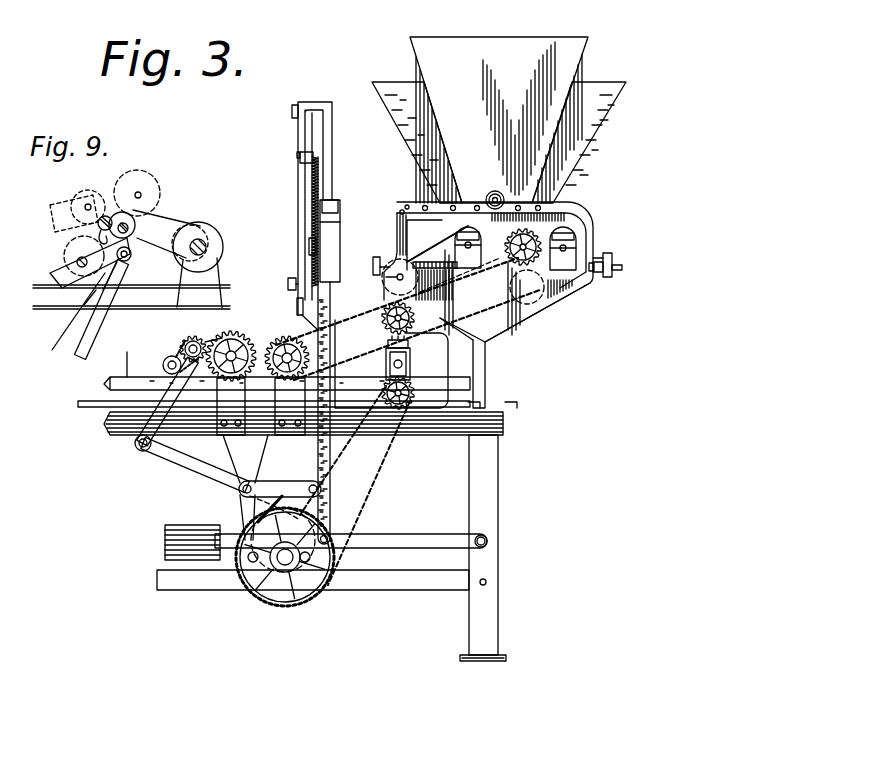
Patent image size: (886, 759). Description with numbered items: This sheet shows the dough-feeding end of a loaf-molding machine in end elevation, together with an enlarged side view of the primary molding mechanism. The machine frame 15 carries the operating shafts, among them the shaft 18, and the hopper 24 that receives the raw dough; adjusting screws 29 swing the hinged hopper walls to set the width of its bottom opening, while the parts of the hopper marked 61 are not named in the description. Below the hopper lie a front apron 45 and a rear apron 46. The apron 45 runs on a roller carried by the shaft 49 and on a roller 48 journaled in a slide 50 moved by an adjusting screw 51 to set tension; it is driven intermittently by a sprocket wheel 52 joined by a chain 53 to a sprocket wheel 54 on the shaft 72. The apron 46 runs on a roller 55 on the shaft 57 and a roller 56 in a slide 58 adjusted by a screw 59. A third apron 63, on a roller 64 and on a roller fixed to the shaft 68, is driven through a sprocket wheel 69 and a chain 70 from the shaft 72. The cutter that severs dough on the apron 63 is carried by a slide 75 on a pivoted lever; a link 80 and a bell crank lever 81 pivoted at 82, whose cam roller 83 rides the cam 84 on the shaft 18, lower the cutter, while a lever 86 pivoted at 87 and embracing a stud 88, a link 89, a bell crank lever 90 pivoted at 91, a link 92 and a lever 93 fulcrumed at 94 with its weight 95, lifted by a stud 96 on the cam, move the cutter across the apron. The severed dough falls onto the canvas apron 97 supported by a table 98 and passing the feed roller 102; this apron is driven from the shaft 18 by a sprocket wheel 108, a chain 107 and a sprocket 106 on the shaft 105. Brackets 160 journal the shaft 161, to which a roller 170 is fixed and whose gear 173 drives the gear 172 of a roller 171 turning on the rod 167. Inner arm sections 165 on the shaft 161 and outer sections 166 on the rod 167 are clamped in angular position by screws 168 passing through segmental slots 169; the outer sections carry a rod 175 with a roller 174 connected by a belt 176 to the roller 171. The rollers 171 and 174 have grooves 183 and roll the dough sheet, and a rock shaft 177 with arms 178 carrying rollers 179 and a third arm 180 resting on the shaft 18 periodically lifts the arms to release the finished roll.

In FIG. 3, the machine frame 15 is at (470, 455).
In FIG. 3, the shaft 18 is at (292, 568).
In FIG. 3, the hopper 24 is at (499, 105).
In FIG. 3, the adjusting screws 29 is at (500, 192).
In FIG. 3, the apron 45 is at (547, 229).
In FIG. 3, the apron 46 is at (422, 258).
In FIG. 3, the roller 48 is at (572, 235).
In FIG. 3, the shaft 49 is at (540, 232).
In FIG. 3, the slide 50 is at (582, 265).
In FIG. 3, the adjusting screw 51 is at (620, 268).
In FIG. 3, the sprocket wheel 52 is at (515, 287).
In FIG. 3, the chain 53 is at (470, 300).
In FIG. 3, the sprocket wheel 54 is at (455, 318).
In FIG. 3, the roller 55 is at (392, 286).
In FIG. 3, the roller 56 is at (455, 250).
In FIG. 3, the shaft 57 is at (397, 277).
In FIG. 3, the slide 58 is at (513, 255).
In FIG. 3, the adjusting screw 59 is at (373, 265).
In FIG. 3, the hopper wing 61 is at (392, 86).
In FIG. 3, the third apron or conveyer 63 is at (507, 300).
In FIG. 3, the roller 64 is at (540, 302).
In FIG. 3, the shaft 68 is at (282, 383).
In FIG. 3, the sprocket wheel 69 is at (297, 341).
In FIG. 3, the chain 70 is at (358, 355).
In FIG. 3, the shaft 72 is at (412, 330).
In FIG. 3, the slide 75 is at (297, 304).
In FIG. 3, the link 80 is at (312, 444).
In FIG. 3, the bell crank lever 81 is at (318, 463).
In FIG. 3, the pivot 82 is at (241, 492).
In FIG. 3, the cam roller 83 is at (256, 576).
In FIG. 3, the cam 84 is at (260, 508).
In FIG. 3, the lever 86 is at (298, 200).
In FIG. 3, the pivot 87 is at (294, 105).
In FIG. 3, the stud 88 is at (288, 282).
In FIG. 3, the link 89 is at (300, 160).
In FIG. 3, the bell crank lever 90 is at (315, 208).
In FIG. 3, the pivot 91 is at (309, 246).
In FIG. 3, the link 92 is at (330, 458).
In FIG. 3, the lever 93 is at (405, 536).
In FIG. 3, the fulcrum 94 is at (488, 540).
In FIG. 3, the weight 95 is at (180, 526).
In FIG. 3, the stud or roller 96 is at (310, 565).
In FIG. 3, the fourth apron or conveyer 97 is at (127, 355).
In FIG. 3, the table 98 is at (108, 384).
In FIG. 3, the feed roller 102 is at (410, 368).
In FIG. 3, the shaft 105 is at (412, 392).
In FIG. 3, the sprocket 106 is at (402, 410).
In FIG. 3, the chain 107 is at (367, 490).
In FIG. 3, the sprocket wheel 108 is at (281, 608).
In FIG. 3, the brackets 160 is at (224, 432).
In FIG. 9, the brackets 160 is at (181, 312).
In FIG. 3, the shaft 161 is at (242, 333).
In FIG. 9, the shaft 161 is at (201, 241).
In FIG. 9, the inner sections 165 is at (160, 230).
In FIG. 9, the outer sections 166 is at (54, 272).
In FIG. 3, the rod or shaft 167 is at (194, 342).
In FIG. 9, the rod or shaft 167 is at (120, 223).
In FIG. 9, the clamp screws 168 is at (97, 233).
In FIG. 9, the segmental slots 169 is at (79, 257).
In FIG. 9, the roller 170 is at (218, 232).
In FIG. 9, the second roller 171 is at (125, 210).
In FIG. 3, the gear 172 is at (188, 341).
In FIG. 3, the gear 173 is at (220, 332).
In FIG. 3, the third roller 174 is at (177, 356).
In FIG. 9, the third roller 174 is at (86, 301).
In FIG. 3, the rod or shaft 175 is at (163, 367).
In FIG. 9, the rod or shaft 175 is at (82, 279).
In FIG. 3, the belt or sprocket chain 176 is at (180, 344).
In FIG. 3, the rock shaft 177 is at (138, 450).
In FIG. 3, the arms 178 is at (165, 394).
In FIG. 9, the arms 178 is at (74, 328).
In FIG. 9, the rollers 179 is at (132, 258).
In FIG. 3, the third arm 180 is at (170, 466).
In FIG. 9, the grooves 183 is at (100, 296).